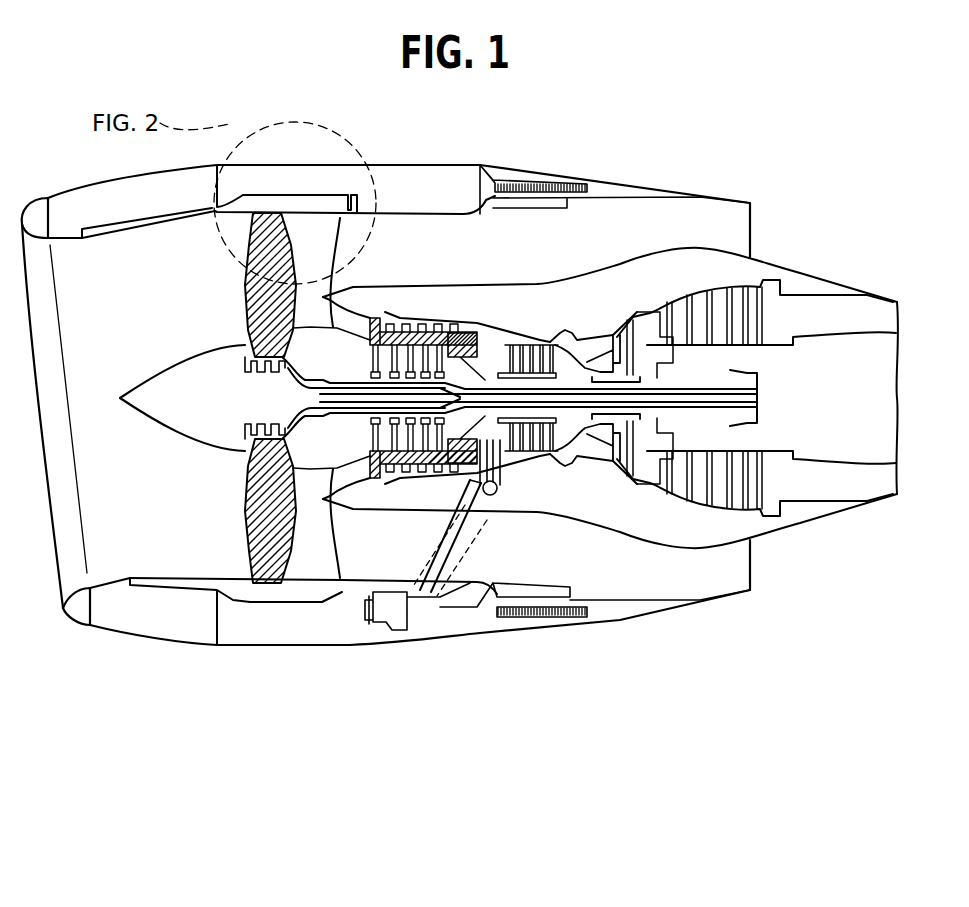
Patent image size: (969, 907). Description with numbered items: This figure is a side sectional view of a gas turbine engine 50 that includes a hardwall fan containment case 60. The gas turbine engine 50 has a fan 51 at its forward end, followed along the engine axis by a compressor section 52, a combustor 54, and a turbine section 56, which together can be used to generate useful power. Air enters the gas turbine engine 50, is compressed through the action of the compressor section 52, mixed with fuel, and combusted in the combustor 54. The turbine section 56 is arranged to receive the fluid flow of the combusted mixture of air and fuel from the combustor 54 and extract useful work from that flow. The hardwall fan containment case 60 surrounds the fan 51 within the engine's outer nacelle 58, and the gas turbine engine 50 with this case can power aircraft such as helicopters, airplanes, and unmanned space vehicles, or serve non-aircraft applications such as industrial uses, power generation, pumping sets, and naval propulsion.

The gas turbine engine 50 is at (460, 436).
The fan 51 is at (257, 278).
The compressor section 52 is at (436, 324).
The combustor 54 is at (557, 420).
The turbine section 56 is at (746, 514).
The nacelle 58 is at (730, 232).
The hardwall fan containment case 60 is at (230, 221).